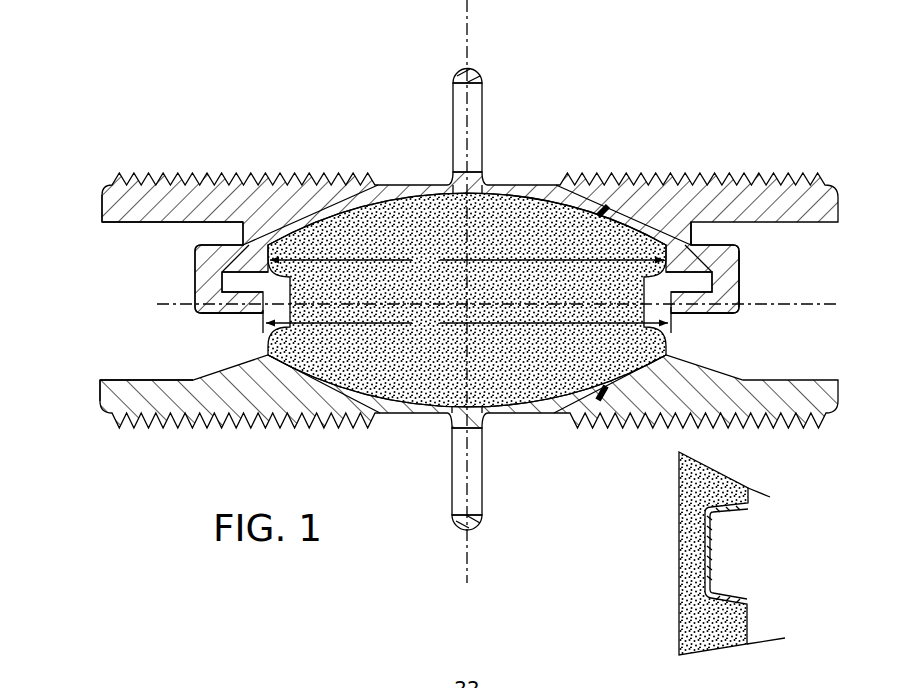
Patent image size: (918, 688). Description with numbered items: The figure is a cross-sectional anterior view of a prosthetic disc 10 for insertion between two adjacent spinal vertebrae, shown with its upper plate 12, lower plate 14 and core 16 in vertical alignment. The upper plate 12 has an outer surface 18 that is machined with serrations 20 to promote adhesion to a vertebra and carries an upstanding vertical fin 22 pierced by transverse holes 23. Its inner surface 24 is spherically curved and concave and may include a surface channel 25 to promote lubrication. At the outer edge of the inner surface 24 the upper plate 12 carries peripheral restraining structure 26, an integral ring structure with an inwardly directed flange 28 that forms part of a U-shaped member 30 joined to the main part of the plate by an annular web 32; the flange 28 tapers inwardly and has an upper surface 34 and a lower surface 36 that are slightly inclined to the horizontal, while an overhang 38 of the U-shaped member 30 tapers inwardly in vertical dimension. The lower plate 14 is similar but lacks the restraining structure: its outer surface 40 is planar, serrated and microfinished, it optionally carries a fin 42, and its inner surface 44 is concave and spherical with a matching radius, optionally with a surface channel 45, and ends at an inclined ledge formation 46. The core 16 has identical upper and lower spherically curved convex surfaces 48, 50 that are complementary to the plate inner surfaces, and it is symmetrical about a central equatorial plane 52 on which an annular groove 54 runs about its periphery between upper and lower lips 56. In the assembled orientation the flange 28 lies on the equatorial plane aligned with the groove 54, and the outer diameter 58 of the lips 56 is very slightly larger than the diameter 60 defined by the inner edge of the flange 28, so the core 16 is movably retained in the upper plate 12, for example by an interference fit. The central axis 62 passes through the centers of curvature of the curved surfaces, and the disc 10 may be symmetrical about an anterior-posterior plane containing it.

The prosthetic disc 10 is at (577, 128).
The upper plate 12 is at (135, 227).
The lower plate 14 is at (140, 375).
The core 16 is at (440, 368).
The outer surface 18 is at (238, 166).
The serrations 20 is at (288, 184).
The fin 22 is at (456, 72).
The transverse holes 23 is at (455, 114).
The inner surface 24 is at (527, 203).
The surface channel 25 is at (604, 200).
The peripheral restraining structure 26 is at (750, 294).
The flange 28 is at (220, 314).
The U-shaped member 30 is at (730, 266).
The annular web 32 is at (697, 232).
The upper surface 34 is at (291, 281).
The lower surface 36 is at (233, 314).
The overhang 38 is at (224, 278).
The outer surface 40 is at (208, 445).
The fin 42 is at (483, 530).
The inner surface 44 is at (388, 390).
The surface channel 45 is at (600, 400).
The inclined ledge formation 46 is at (225, 376).
The upper curved surface 48 is at (393, 198).
The lower curved surface 50 is at (503, 412).
The equatorial plane 52 is at (793, 307).
The groove 54 is at (648, 315).
The lips 56 is at (652, 238).
The outer diameter 58 is at (467, 260).
The diameter 60 is at (467, 324).
The central axis 62 is at (461, 560).